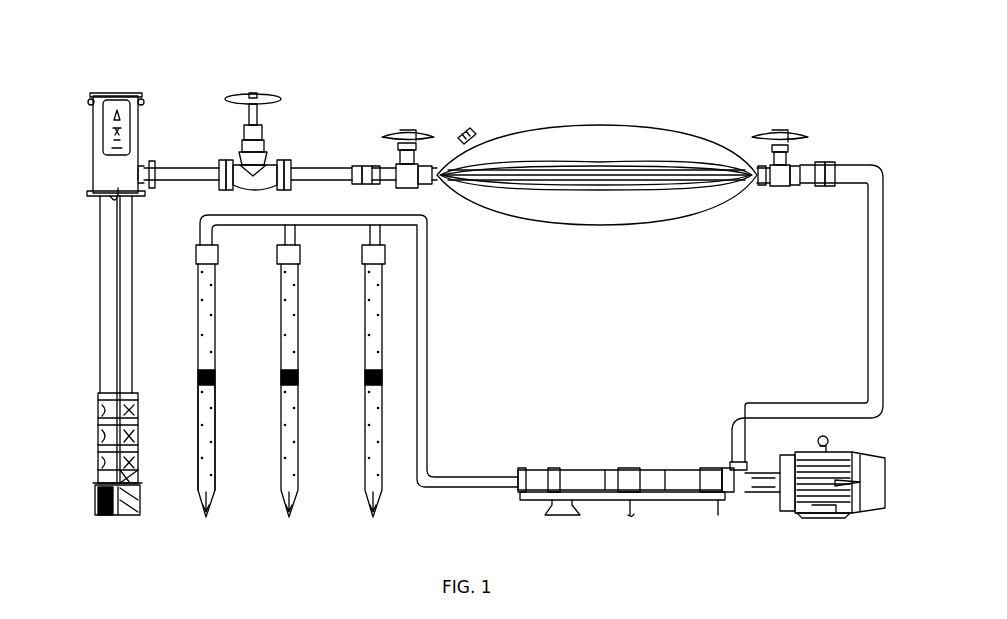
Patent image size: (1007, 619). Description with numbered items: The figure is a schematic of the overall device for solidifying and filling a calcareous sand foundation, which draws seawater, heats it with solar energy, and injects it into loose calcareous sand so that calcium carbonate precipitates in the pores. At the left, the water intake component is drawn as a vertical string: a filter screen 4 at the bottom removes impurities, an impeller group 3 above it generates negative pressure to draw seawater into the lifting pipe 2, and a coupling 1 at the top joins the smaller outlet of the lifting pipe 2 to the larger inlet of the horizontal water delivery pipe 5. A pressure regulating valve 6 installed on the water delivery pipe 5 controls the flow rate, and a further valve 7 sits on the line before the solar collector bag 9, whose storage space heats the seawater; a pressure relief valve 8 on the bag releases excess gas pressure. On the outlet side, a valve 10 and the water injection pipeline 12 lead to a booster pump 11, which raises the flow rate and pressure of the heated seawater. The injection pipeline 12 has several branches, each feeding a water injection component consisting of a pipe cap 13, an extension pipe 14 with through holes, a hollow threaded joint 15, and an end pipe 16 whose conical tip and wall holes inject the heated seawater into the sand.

The coupling 1 is at (93, 160).
The lifting pipe 2 is at (98, 290).
The impeller group 3 is at (97, 420).
The filter screen 4 is at (95, 500).
The water delivery pipe 5 is at (178, 166).
The pressure regulating valve 6 is at (268, 95).
The control valve 7 is at (408, 135).
The pressure relief valve 8 is at (467, 132).
The solar collector bag 9 is at (615, 126).
The outlet valve 10 is at (781, 130).
The booster pump 11 is at (885, 458).
The return pipe 12 is at (468, 473).
The pipe cap 13 is at (218, 253).
The extension pipe 14 is at (216, 312).
The threaded joint 15 is at (218, 378).
The end pipe 16 is at (216, 430).